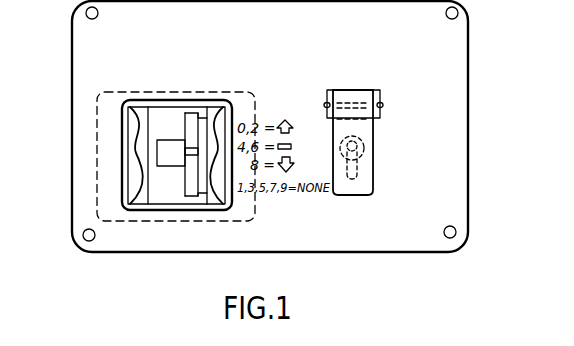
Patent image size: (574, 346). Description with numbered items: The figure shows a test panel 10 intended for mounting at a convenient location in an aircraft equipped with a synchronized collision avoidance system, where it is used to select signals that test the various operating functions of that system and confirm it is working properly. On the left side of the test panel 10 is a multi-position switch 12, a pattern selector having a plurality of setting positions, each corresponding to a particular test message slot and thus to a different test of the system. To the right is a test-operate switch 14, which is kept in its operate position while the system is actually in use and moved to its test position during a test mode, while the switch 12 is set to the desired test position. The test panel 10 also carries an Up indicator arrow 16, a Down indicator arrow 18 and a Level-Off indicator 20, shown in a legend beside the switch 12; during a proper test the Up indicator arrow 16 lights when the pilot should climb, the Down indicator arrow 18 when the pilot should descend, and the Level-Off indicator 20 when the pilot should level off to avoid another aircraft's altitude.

The test panel 10 is at (470, 81).
The multi-position switch 12 is at (121, 163).
The test-operate switch 14 is at (362, 197).
The Up indicator arrow 16 is at (292, 120).
The Down indicator arrow 18 is at (295, 164).
The Level-Off indicator 20 is at (292, 147).